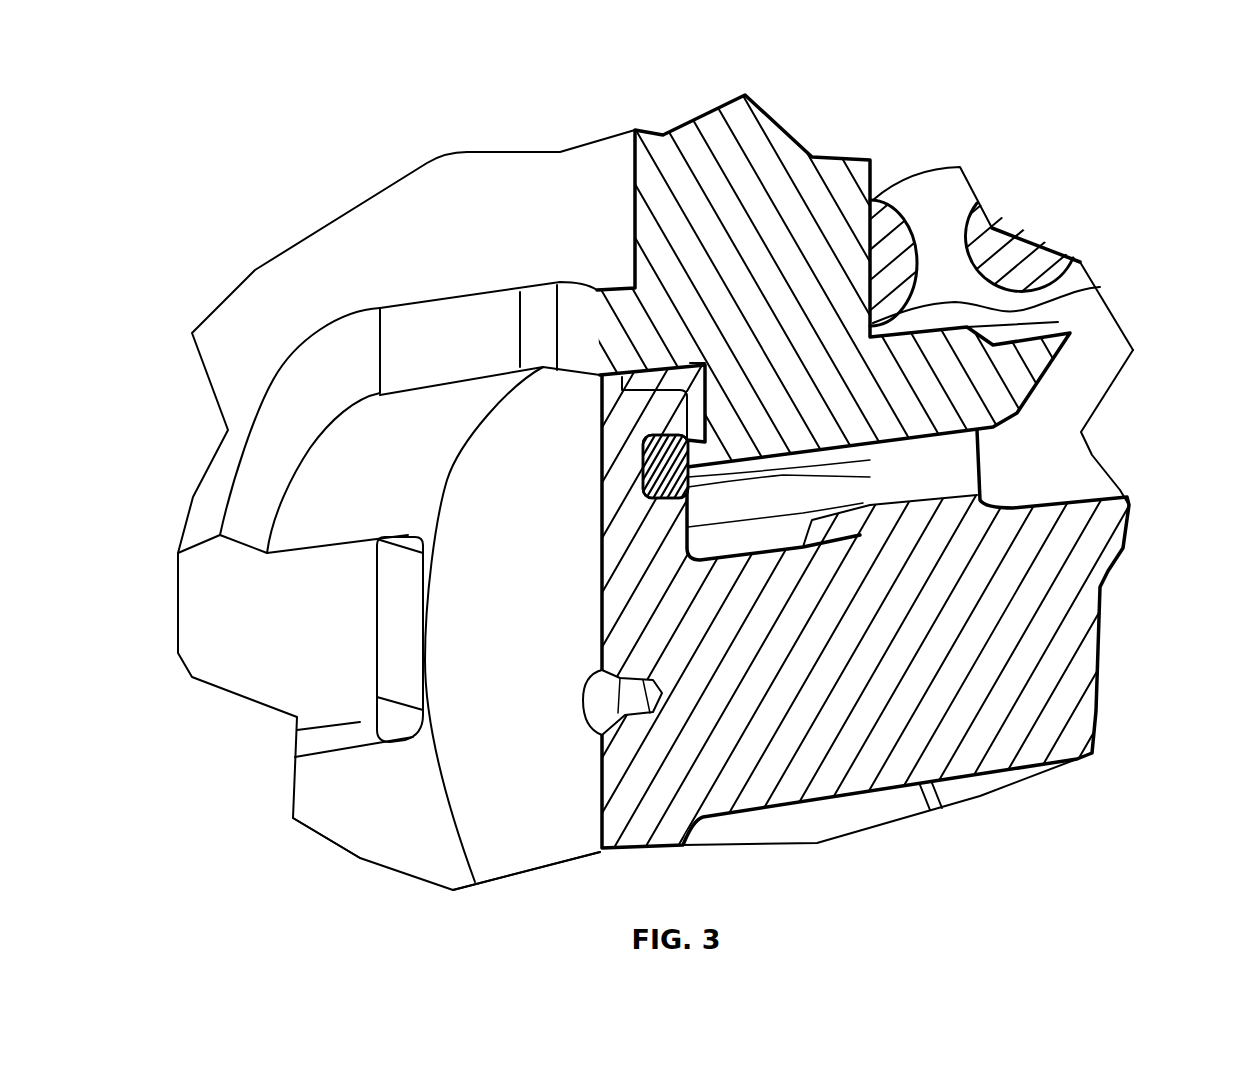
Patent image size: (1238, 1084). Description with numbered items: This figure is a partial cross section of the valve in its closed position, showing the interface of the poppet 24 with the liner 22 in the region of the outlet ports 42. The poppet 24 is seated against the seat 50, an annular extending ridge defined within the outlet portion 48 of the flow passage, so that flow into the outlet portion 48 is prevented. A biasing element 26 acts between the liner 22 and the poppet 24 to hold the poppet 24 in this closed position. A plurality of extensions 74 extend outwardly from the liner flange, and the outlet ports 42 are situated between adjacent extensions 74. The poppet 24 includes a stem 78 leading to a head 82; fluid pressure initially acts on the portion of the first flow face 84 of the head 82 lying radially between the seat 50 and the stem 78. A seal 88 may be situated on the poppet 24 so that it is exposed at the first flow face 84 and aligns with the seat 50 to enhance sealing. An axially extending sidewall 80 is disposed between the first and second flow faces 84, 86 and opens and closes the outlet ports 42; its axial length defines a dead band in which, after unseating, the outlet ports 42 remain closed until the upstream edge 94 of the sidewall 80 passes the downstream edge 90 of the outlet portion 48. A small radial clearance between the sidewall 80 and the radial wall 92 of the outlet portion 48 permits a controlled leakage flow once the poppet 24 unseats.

The liner 22 is at (873, 190).
The poppet 24 is at (472, 823).
The biasing element 26 is at (1010, 252).
The outlet ports 42 is at (540, 367).
The outlet portion 48 is at (693, 355).
The seat 50 is at (703, 397).
The extensions 74 is at (258, 450).
The stem 78 is at (980, 490).
The axially extending sidewall 80 is at (615, 290).
The head 82 is at (600, 523).
The first flow face 84 is at (980, 470).
The second flow face 86 is at (470, 780).
The seal 88 is at (690, 487).
The downstream edge 90 is at (603, 392).
The radial wall 92 is at (603, 447).
The upstream edge 94 is at (603, 410).